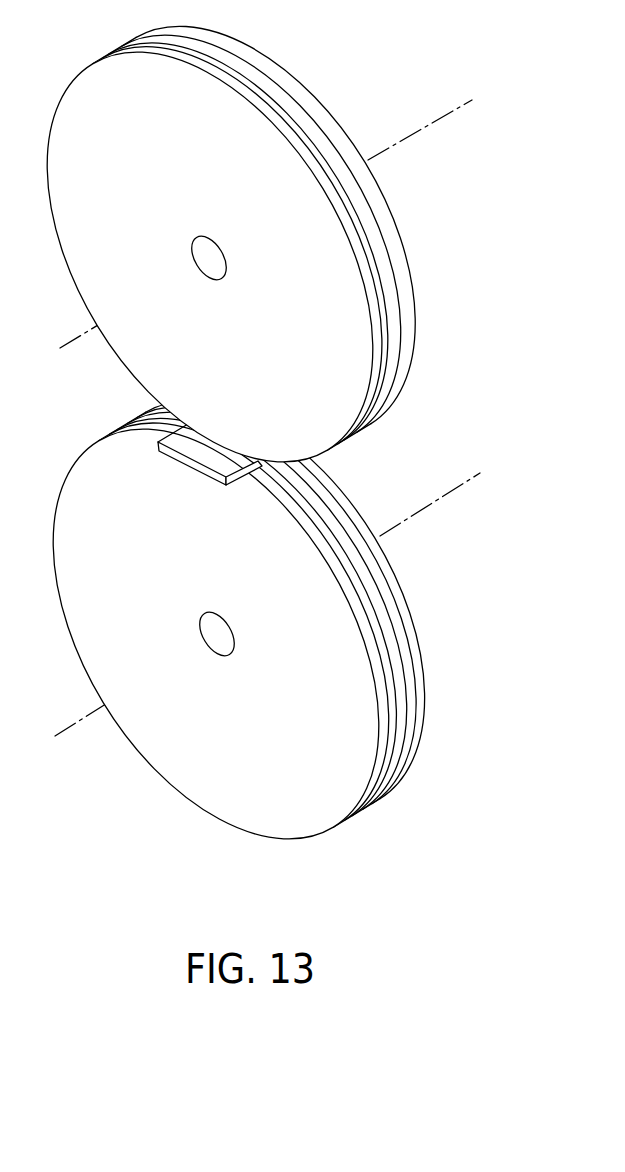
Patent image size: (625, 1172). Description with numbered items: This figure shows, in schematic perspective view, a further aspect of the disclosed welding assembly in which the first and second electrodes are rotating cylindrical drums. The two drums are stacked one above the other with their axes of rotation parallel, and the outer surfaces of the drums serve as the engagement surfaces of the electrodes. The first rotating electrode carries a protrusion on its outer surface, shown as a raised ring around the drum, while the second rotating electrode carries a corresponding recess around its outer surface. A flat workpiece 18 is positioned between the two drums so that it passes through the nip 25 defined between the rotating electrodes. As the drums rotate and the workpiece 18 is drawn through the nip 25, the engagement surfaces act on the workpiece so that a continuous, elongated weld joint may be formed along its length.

The workpiece 18 is at (191, 467).
The nip 25 is at (382, 458).